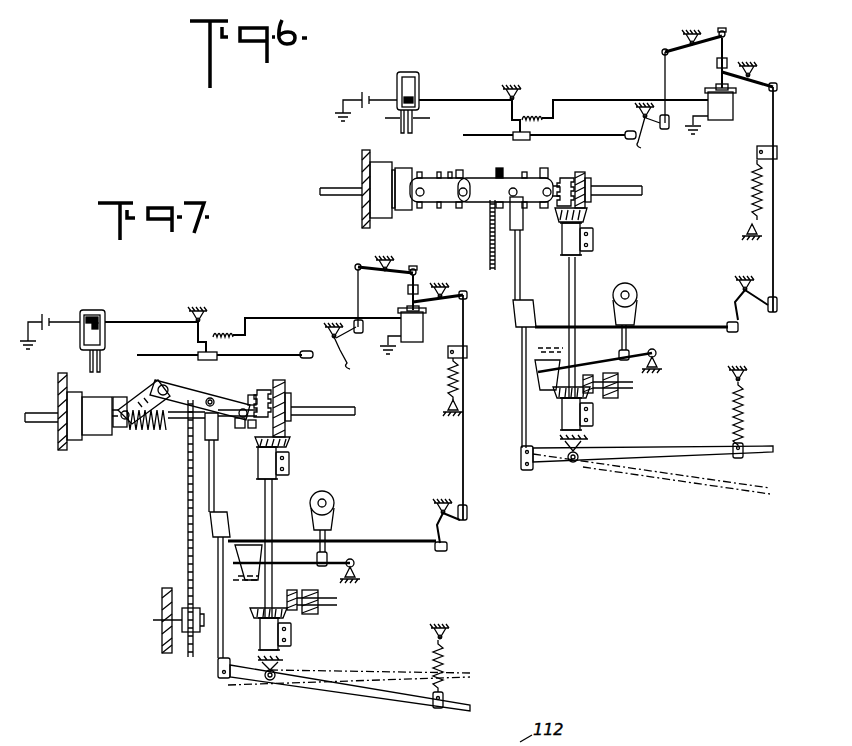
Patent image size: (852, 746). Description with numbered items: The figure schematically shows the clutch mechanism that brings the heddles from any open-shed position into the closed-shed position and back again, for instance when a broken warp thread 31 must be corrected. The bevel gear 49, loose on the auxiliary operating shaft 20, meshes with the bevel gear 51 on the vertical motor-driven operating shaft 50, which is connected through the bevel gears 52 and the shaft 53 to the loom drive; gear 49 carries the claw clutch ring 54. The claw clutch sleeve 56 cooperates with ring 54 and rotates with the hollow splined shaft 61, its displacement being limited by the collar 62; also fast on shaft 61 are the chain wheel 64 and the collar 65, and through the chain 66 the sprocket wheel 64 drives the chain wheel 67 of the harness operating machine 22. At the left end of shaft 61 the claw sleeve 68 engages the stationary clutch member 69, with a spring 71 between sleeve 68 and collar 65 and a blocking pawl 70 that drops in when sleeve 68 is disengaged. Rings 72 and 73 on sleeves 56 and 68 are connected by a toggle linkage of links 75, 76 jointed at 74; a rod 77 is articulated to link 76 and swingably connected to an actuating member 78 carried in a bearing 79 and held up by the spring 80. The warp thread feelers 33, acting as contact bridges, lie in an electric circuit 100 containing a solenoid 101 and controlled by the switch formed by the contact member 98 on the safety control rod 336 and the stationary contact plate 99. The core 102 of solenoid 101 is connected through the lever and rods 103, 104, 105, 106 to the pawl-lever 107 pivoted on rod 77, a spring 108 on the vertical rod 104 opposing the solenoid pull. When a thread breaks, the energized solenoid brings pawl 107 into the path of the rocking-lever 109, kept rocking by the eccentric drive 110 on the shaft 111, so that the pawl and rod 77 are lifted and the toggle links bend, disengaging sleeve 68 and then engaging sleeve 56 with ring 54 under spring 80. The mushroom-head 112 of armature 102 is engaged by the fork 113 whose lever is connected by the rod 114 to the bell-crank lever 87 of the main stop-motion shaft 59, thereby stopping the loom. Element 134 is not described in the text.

In FIG. 6, the operating shaft 20 is at (625, 196).
In FIG. 7, the operating shaft 20 is at (345, 408).
In FIG. 7, the harness operating machine 22 is at (138, 609).
In FIG. 6, the warp thread 31 is at (385, 120).
In FIG. 6, the warp thread feeler 33 is at (420, 75).
In FIG. 7, the warp thread feeler 33 is at (103, 312).
In FIG. 6, the bevel gear 49 is at (586, 176).
In FIG. 7, the bevel gear 49 is at (292, 408).
In FIG. 6, the vertical motor-driven operating shaft 50 is at (576, 272).
In FIG. 7, the vertical motor-driven operating shaft 50 is at (275, 485).
In FIG. 6, the bevel gear 51 is at (587, 218).
In FIG. 7, the bevel gear 51 is at (288, 442).
In FIG. 6, the bevel gears 52 is at (588, 386).
In FIG. 7, the bevel gears 52 is at (286, 608).
In FIG. 6, the shaft 53 is at (628, 391).
In FIG. 7, the shaft 53 is at (337, 603).
In FIG. 6, the claw clutch ring 54 is at (577, 172).
In FIG. 7, the claw clutch ring 54 is at (286, 395).
In FIG. 6, the claw clutch sleeve 56 is at (565, 172).
In FIG. 7, the claw clutch sleeve 56 is at (254, 393).
In FIG. 6, the main stop-motion shaft 59 is at (639, 118).
In FIG. 7, the main stop-motion shaft 59 is at (330, 339).
In FIG. 6, the hollow splined shaft 61 is at (566, 178).
In FIG. 7, the hollow splined shaft 61 is at (266, 392).
In FIG. 6, the collar 62 is at (527, 175).
In FIG. 7, the collar 62 is at (237, 406).
In FIG. 6, the chain wheel 64 is at (503, 172).
In FIG. 7, the chain wheel 64 is at (209, 398).
In FIG. 6, the collar 65 is at (478, 160).
In FIG. 6, the chain 66 is at (490, 255).
In FIG. 7, the chain 66 is at (188, 495).
In FIG. 7, the chain wheel 67 is at (186, 646).
In FIG. 6, the claw sleeve 68 is at (407, 171).
In FIG. 7, the claw sleeve 68 is at (108, 397).
In FIG. 6, the clutch member 69 is at (364, 163).
In FIG. 7, the clutch member 69 is at (60, 385).
In FIG. 6, the blocking pawl 70 is at (390, 168).
In FIG. 7, the blocking pawl 70 is at (90, 395).
In FIG. 6, the spring 71 is at (452, 211).
In FIG. 7, the spring 71 is at (142, 432).
In FIG. 6, the ring 72 is at (547, 170).
In FIG. 7, the ring 72 is at (251, 400).
In FIG. 6, the ring 73 is at (418, 208).
In FIG. 7, the ring 73 is at (118, 430).
In FIG. 6, the joint 74 is at (456, 208).
In FIG. 7, the joint 74 is at (170, 426).
In FIG. 6, the link 75 is at (440, 190).
In FIG. 7, the link 75 is at (158, 386).
In FIG. 6, the link 76 is at (505, 190).
In FIG. 7, the link 76 is at (190, 390).
In FIG. 6, the rod 77 is at (521, 266).
In FIG. 7, the rod 77 is at (216, 482).
In FIG. 6, the actuating member 78 is at (546, 472).
In FIG. 7, the actuating member 78 is at (257, 685).
In FIG. 6, the bearing 79 is at (575, 465).
In FIG. 7, the bearing 79 is at (275, 683).
In FIG. 6, the spring 80 is at (745, 415).
In FIG. 7, the spring 80 is at (450, 667).
In FIG. 6, the bell-crank lever 87 is at (642, 145).
In FIG. 7, the bell-crank lever 87 is at (350, 358).
In FIG. 6, the electric contact member 98 is at (517, 112).
In FIG. 7, the electric contact member 98 is at (207, 330).
In FIG. 6, the stationary contact plate 99 is at (510, 104).
In FIG. 7, the stationary contact plate 99 is at (195, 326).
In FIG. 6, the electric circuit 100 is at (441, 99).
In FIG. 7, the electric circuit 100 is at (253, 315).
In FIG. 6, the solenoid 101 is at (734, 106).
In FIG. 7, the solenoid 101 is at (424, 334).
In FIG. 6, the core 102 is at (727, 52).
In FIG. 7, the core 102 is at (410, 288).
In FIG. 6, the two-armed lever 103 is at (758, 76).
In FIG. 7, the two-armed lever 103 is at (437, 304).
In FIG. 6, the vertical rod 104 is at (771, 245).
In FIG. 7, the vertical rod 104 is at (462, 446).
In FIG. 6, the lever 105 is at (737, 312).
In FIG. 7, the lever 105 is at (450, 538).
In FIG. 6, the rod 106 is at (720, 333).
In FIG. 7, the rod 106 is at (437, 552).
In FIG. 6, the pawl-lever 107 is at (541, 327).
In FIG. 7, the pawl-lever 107 is at (228, 546).
In FIG. 6, the spring 108 is at (750, 190).
In FIG. 7, the spring 108 is at (452, 377).
In FIG. 6, the rocking-lever 109 is at (537, 385).
In FIG. 7, the rocking-lever 109 is at (248, 557).
In FIG. 6, the eccentric drive 110 is at (635, 308).
In FIG. 7, the eccentric drive 110 is at (335, 512).
In FIG. 6, the shaft 111 is at (633, 292).
In FIG. 7, the shaft 111 is at (333, 500).
In FIG. 6, the mushroom-head 112 is at (727, 33).
In FIG. 7, the mushroom-head 112 is at (414, 268).
In FIG. 6, the fork 113 is at (665, 48).
In FIG. 7, the fork 113 is at (356, 267).
In FIG. 6, the rod 114 is at (663, 78).
In FIG. 7, the rod 114 is at (357, 297).
In FIG. 6, the arm 134 is at (658, 355).
In FIG. 7, the arm 134 is at (360, 565).
In FIG. 6, the safety control rod 336 is at (478, 137).
In FIG. 7, the safety control rod 336 is at (158, 352).